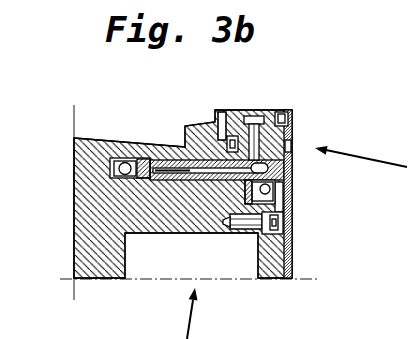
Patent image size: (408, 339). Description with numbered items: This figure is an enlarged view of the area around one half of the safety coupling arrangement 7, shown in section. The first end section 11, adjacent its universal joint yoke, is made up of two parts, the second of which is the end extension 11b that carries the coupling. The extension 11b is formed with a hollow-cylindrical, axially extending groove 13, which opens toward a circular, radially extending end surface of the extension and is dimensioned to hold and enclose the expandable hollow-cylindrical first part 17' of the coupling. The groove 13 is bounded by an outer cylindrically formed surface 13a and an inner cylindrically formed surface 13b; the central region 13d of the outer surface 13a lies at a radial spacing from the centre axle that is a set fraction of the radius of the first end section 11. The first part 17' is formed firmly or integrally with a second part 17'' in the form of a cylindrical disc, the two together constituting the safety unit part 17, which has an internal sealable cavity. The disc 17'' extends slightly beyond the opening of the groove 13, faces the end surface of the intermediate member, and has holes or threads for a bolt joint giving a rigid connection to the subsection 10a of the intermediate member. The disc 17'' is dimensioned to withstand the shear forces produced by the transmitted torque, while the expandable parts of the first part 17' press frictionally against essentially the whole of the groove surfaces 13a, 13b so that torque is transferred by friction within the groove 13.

The safety coupling arrangement 7 is at (316, 123).
The subsection of intermediate member 10a is at (352, 257).
The first end section 11 is at (111, 126).
The end extension 11b is at (93, 194).
The groove 13 is at (143, 157).
The outer cylindrically formed surface 13a is at (202, 160).
The inner cylindrically formed surface 13b is at (177, 184).
The central region of the outer cylindrically formed surface 13d is at (200, 183).
The safety unit part 17 is at (217, 124).
The first part 17' is at (79, 214).
The second part 17'' is at (317, 187).